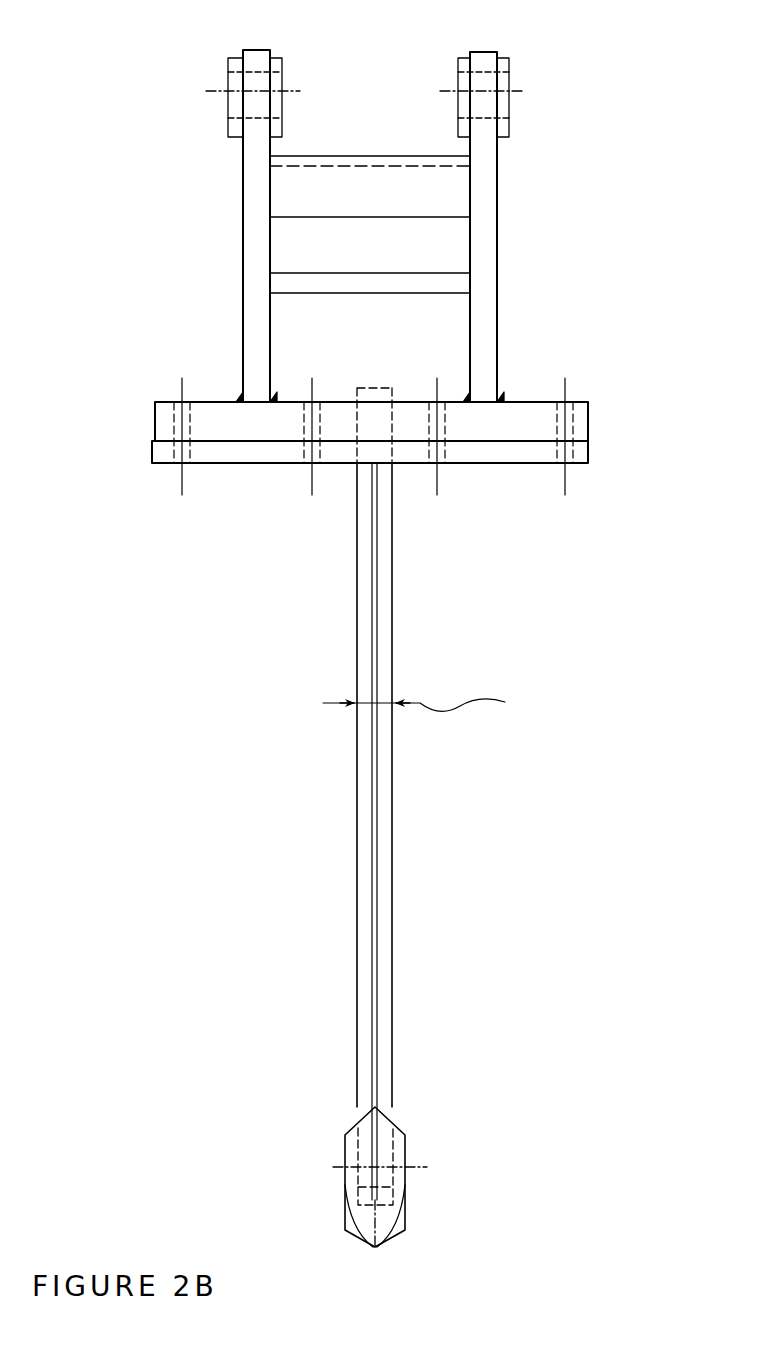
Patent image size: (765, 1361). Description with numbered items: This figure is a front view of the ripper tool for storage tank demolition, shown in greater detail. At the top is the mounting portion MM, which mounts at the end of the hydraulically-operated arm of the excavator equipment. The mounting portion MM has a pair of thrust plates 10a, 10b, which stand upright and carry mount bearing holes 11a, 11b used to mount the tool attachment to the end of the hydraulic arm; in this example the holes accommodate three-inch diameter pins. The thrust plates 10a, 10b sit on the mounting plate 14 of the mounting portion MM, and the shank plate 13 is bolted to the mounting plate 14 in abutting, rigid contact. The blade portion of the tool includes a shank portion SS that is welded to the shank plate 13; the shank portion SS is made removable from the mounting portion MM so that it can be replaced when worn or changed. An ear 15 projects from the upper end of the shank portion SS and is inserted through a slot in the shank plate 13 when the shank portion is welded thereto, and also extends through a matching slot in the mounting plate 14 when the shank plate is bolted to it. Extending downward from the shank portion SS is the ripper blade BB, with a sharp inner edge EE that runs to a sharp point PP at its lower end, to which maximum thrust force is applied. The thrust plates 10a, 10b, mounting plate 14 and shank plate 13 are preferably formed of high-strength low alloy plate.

The thrust plate 10a is at (488, 223).
The thrust plate 10b is at (241, 222).
The mount bearing hole 11a is at (510, 66).
The mount bearing hole 11b is at (230, 66).
The mounting portion MM is at (500, 180).
The shank plate 13 is at (592, 455).
The mounting plate 14 is at (592, 414).
The ear 15 is at (378, 386).
The shank portion SS is at (396, 562).
The sharp inner edge EE is at (435, 706).
The ripper blade BB is at (395, 888).
The sharp point PP is at (405, 1163).